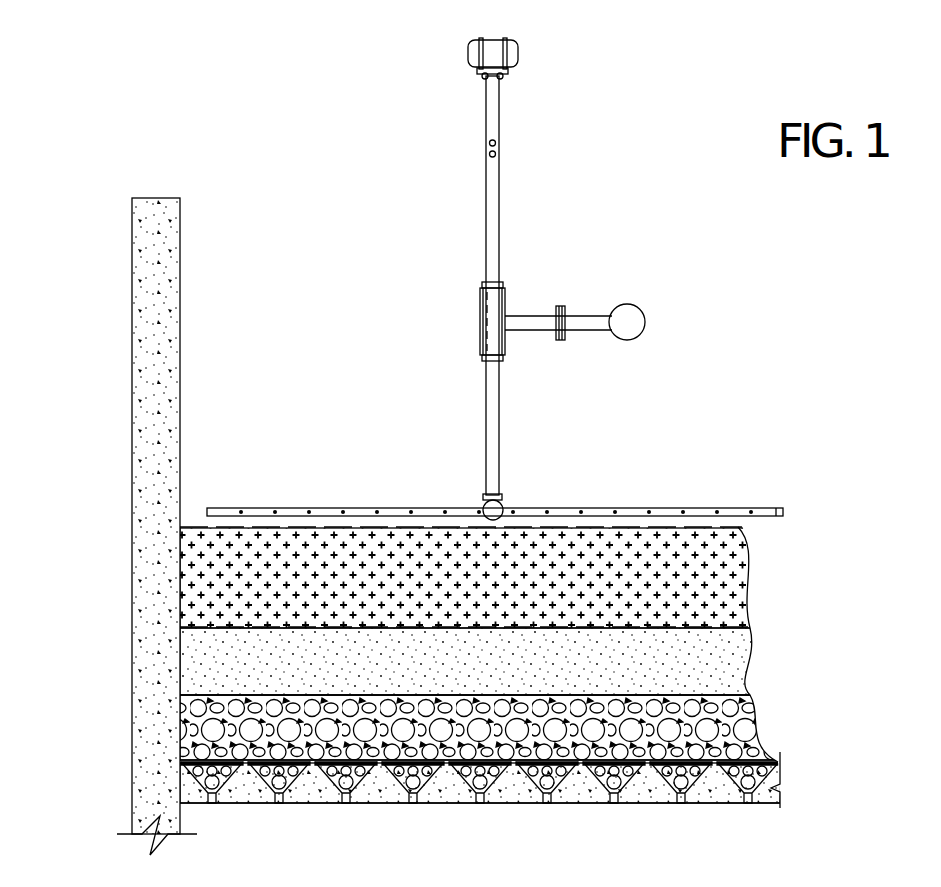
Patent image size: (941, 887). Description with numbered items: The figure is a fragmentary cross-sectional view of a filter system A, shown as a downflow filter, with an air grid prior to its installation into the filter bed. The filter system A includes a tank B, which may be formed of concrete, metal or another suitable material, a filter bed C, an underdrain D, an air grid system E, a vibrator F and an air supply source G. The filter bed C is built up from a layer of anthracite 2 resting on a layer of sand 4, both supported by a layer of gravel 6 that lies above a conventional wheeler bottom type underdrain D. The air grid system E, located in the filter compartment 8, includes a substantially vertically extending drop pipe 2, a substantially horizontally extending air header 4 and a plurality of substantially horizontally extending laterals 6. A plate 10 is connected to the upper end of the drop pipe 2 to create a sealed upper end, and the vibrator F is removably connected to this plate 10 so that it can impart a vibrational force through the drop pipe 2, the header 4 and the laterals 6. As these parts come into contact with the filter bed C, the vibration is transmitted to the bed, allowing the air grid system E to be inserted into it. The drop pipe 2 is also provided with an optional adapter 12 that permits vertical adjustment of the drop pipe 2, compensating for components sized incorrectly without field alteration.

The drop pipe 2 is at (730, 581).
The air header 4 is at (720, 661).
The laterals 6 is at (742, 718).
The filter compartment 8 is at (277, 367).
The plate 10 is at (503, 77).
The adapter 12 is at (508, 283).
The filter system A is at (287, 162).
The tank B is at (148, 455).
The filter bed C is at (536, 644).
The underdrain D is at (782, 780).
The air grid system E is at (437, 412).
The vibrator F is at (465, 57).
The air supply source G is at (645, 303).